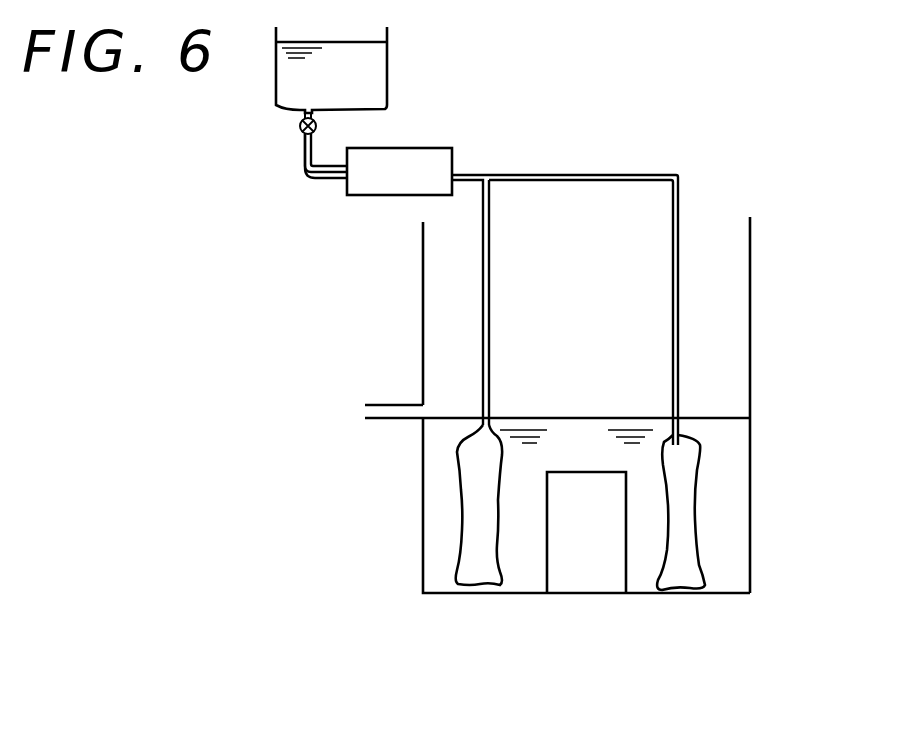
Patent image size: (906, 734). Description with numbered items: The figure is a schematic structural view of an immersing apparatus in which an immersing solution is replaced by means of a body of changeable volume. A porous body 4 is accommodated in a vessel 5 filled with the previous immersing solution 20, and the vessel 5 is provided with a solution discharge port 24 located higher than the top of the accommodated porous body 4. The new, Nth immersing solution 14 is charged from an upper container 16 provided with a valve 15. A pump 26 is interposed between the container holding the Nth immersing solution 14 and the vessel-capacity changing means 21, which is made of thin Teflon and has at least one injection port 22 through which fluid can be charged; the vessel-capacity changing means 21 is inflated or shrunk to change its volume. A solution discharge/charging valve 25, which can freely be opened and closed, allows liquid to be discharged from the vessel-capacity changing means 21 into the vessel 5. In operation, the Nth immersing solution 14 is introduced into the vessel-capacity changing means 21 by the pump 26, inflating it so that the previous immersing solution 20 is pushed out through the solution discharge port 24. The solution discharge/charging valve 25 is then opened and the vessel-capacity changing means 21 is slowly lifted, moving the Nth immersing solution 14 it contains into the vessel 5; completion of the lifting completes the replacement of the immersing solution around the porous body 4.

The porous body 4 is at (588, 578).
The vessel 5 is at (752, 357).
The Nth immersing solution 14 is at (368, 76).
The valve 15 is at (300, 126).
The upper container 16 is at (276, 33).
The (N-1)th immersing solution 20 is at (722, 553).
The vessel-capacity changing means 21 is at (705, 468).
The injection port 22 is at (685, 440).
The solution discharge port 24 is at (381, 412).
The solution discharge/charging valve 25 is at (487, 585).
The pump 26 is at (437, 158).